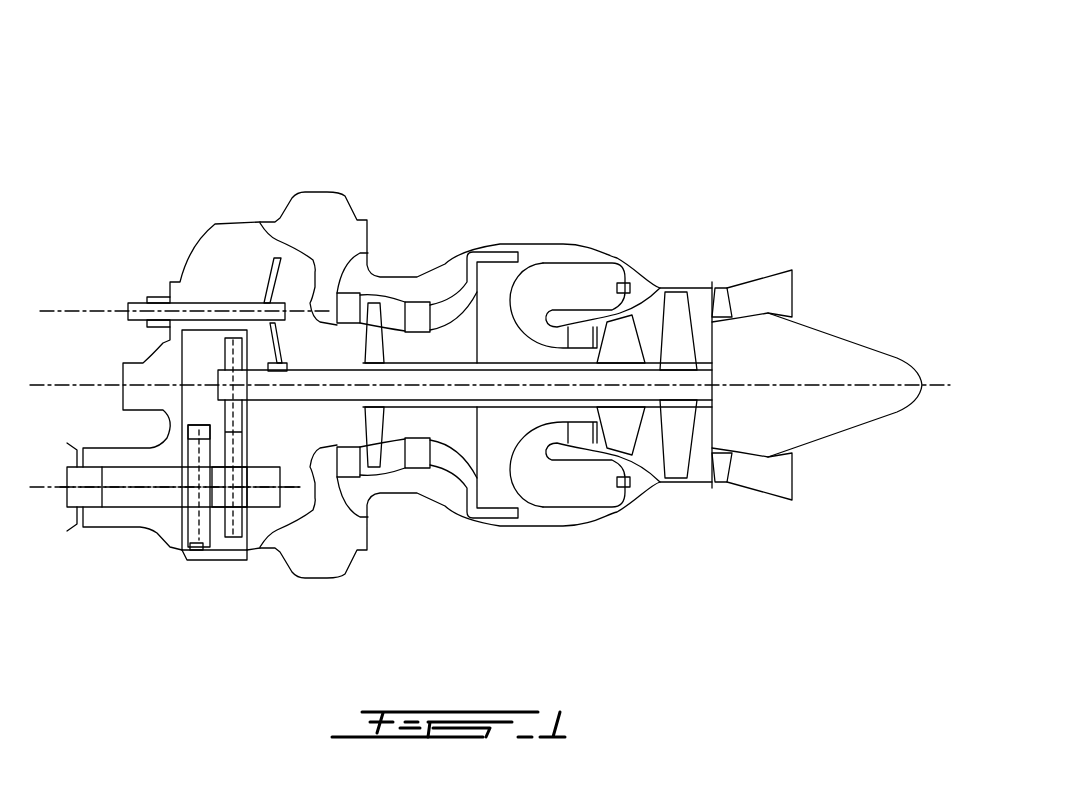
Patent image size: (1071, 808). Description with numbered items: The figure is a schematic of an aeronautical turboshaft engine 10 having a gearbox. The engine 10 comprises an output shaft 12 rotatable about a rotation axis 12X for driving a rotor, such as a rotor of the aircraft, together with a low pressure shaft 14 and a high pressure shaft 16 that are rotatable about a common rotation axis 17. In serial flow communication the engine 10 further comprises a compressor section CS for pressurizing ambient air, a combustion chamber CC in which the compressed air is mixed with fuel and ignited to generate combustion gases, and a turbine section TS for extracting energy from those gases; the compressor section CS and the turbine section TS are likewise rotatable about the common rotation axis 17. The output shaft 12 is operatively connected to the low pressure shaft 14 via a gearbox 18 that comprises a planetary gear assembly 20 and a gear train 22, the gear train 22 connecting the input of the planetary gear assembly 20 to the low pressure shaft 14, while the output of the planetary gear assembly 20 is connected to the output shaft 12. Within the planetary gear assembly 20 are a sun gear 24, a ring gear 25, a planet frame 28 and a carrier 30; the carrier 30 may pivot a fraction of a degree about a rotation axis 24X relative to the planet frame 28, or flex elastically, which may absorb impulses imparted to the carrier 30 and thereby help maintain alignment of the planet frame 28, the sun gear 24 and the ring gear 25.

The engine 10 is at (741, 177).
The output shaft 12 is at (112, 507).
The rotation axis 12X is at (45, 490).
The low pressure shaft 14 is at (320, 377).
The high pressure shaft 16 is at (397, 357).
The common rotation axis 17 is at (815, 385).
The gearbox 18 is at (190, 550).
The planetary gear assembly 20 is at (194, 394).
The gear train 22 is at (233, 320).
The sun gear 24 is at (217, 517).
The rotation axis 24X is at (292, 487).
The ring gear 25 is at (183, 398).
The planet frame 28 is at (203, 533).
The carrier 30 is at (187, 462).
The compressor section CS is at (415, 499).
The combustion chamber CC is at (540, 539).
The turbine section TS is at (650, 497).